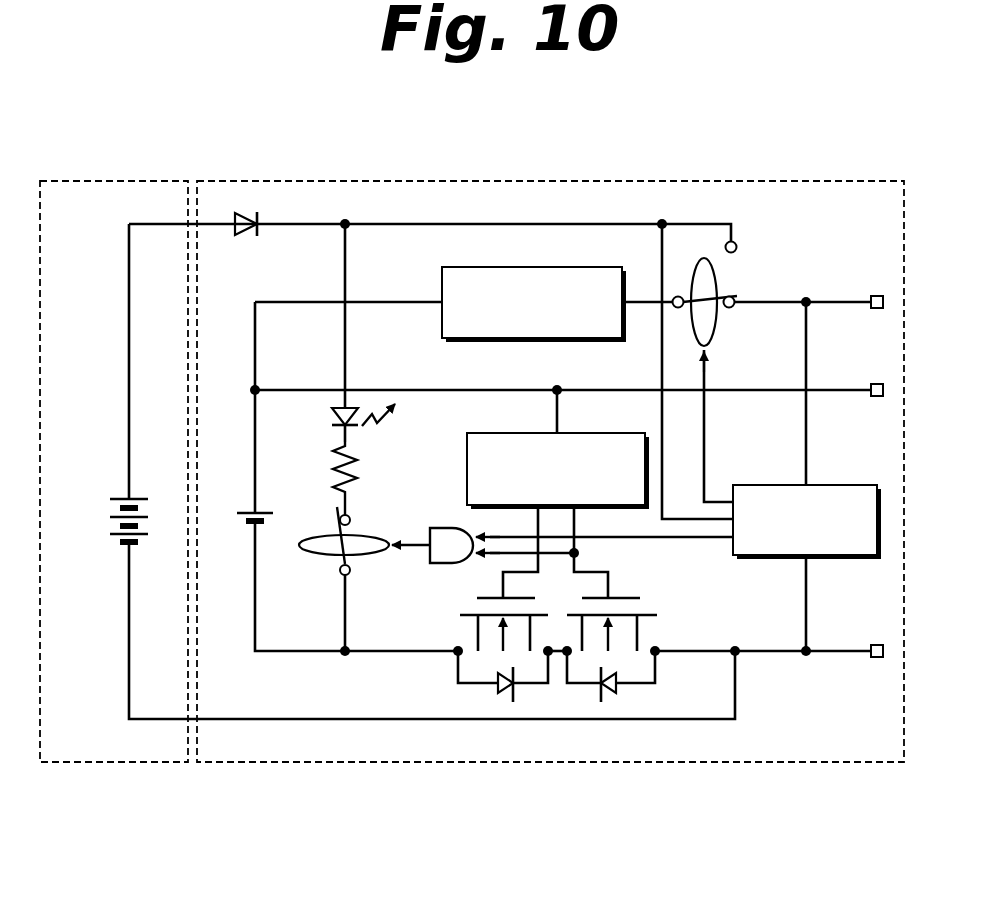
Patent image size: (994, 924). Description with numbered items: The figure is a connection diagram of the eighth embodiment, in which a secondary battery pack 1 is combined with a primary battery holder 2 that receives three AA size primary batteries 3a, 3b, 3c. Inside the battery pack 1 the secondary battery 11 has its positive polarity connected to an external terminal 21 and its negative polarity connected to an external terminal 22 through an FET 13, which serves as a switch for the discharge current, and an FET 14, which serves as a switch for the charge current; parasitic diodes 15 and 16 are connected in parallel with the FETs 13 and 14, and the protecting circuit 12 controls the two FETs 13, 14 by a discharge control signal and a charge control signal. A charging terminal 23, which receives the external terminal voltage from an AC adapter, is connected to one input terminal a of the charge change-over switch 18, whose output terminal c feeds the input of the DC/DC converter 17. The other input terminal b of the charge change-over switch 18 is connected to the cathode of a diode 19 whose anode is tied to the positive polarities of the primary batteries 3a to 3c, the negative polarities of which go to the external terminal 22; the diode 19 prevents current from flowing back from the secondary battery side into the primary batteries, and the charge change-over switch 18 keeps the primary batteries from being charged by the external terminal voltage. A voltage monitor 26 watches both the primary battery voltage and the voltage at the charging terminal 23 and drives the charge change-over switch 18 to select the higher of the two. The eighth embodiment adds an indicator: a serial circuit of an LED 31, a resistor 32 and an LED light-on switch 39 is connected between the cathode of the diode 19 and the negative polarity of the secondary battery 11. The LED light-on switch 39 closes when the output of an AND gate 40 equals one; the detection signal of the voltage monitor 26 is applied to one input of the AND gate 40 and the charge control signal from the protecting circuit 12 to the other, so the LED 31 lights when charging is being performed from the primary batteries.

The battery pack 1 is at (116, 181).
The primary battery holder 2 is at (541, 181).
The primary battery 3a is at (110, 499).
The primary battery 3b is at (110, 518).
The primary battery 3c is at (110, 542).
The secondary battery 11 is at (273, 517).
The protecting circuit 12 is at (605, 433).
The FET 13 is at (535, 600).
The FET 14 is at (640, 600).
The parasitic diode 15 is at (503, 695).
The parasitic diode 16 is at (605, 695).
The DC/DC converter 17 is at (442, 285).
The charge change-over switch 18 is at (718, 333).
The diode 19 is at (248, 214).
The external terminal 21 is at (877, 396).
The external terminal 22 is at (877, 657).
The charging terminal 23 is at (877, 308).
The voltage monitor 26 is at (833, 485).
The LED 31 is at (332, 419).
The resistor 32 is at (332, 463).
The LED light-on switch 39 is at (372, 556).
The AND gate 40 is at (446, 563).
The input terminal a is at (731, 308).
The input terminal b is at (738, 247).
The output terminal c is at (676, 308).